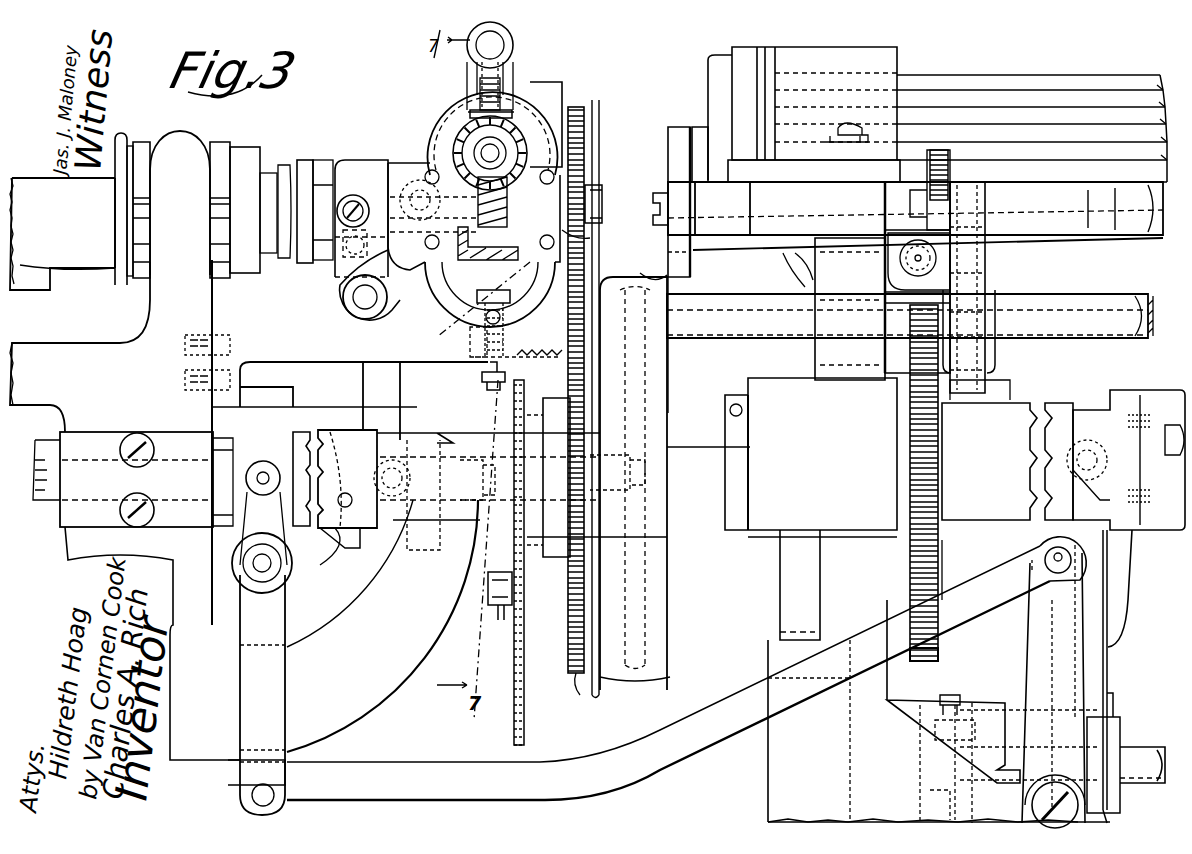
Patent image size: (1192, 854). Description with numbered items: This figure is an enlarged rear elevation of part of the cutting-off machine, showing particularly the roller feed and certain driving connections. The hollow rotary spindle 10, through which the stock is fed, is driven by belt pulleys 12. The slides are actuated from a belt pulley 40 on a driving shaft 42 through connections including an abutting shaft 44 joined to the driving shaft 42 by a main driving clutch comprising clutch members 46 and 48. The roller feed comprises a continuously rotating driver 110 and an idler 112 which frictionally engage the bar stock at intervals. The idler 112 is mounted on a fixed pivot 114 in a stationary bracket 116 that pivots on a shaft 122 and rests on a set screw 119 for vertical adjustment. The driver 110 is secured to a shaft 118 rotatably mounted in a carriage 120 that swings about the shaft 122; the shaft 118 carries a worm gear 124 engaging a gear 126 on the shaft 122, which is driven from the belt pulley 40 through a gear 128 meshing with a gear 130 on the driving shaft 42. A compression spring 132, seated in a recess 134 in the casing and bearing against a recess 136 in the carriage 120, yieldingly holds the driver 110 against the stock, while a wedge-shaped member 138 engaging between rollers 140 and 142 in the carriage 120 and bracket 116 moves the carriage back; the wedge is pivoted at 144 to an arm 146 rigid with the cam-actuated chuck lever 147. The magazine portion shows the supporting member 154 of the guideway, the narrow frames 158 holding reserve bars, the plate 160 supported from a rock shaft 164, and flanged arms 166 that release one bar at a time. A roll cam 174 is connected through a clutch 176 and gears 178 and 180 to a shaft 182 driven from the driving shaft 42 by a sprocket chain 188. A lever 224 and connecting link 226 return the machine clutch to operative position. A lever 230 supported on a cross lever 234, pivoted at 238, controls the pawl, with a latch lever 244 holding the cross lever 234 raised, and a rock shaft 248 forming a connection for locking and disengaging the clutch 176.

The hollow rotary spindle 10 is at (262, 150).
The belt pulleys 12 is at (75, 280).
The belt pulley 40 is at (668, 390).
The driving shaft 42 is at (435, 440).
The abutting shaft 44 is at (58, 440).
The clutch member 46 is at (300, 530).
The clutch member 48 is at (345, 535).
The driver 110 is at (485, 135).
The idler 112 is at (470, 300).
The fixed pivot 114 is at (480, 320).
The stationary bracket 116 is at (470, 345).
The shaft 118 is at (470, 125).
The set screw 119 is at (482, 375).
The carriage 120 is at (462, 140).
The shaft 122 is at (602, 200).
The worm gear 124 is at (462, 150).
The gear 126 is at (473, 160).
The gear 128 is at (584, 128).
The gear 130 is at (580, 695).
The compression spring 132 is at (505, 88).
The recess 134 is at (512, 52).
The recess 136 is at (512, 114).
The wedge-shaped member 138 is at (420, 162).
The roller 140 is at (562, 110).
The roller 142 is at (590, 238).
The pivot 144 is at (367, 193).
The arm 146 is at (320, 165).
The chuck lever 147 is at (365, 375).
The supporting member 154 is at (1140, 215).
The frames 158 is at (830, 76).
The plate 160 is at (1112, 210).
The rock shaft 164 is at (1095, 320).
The flanged arms 166 is at (955, 257).
The roll cam 174 is at (1180, 410).
The clutch 176 is at (1050, 400).
The gear 178 is at (950, 452).
The gear 180 is at (940, 655).
The shaft 182 is at (488, 590).
The sprocket chain 188 is at (514, 740).
The lever 224 is at (1030, 680).
The connecting link 226 is at (686, 668).
The lever 230 is at (750, 248).
The cross lever 234 is at (672, 150).
The pivot 238 is at (653, 207).
The latch lever 244 is at (800, 290).
The rock shaft 248 is at (1145, 785).